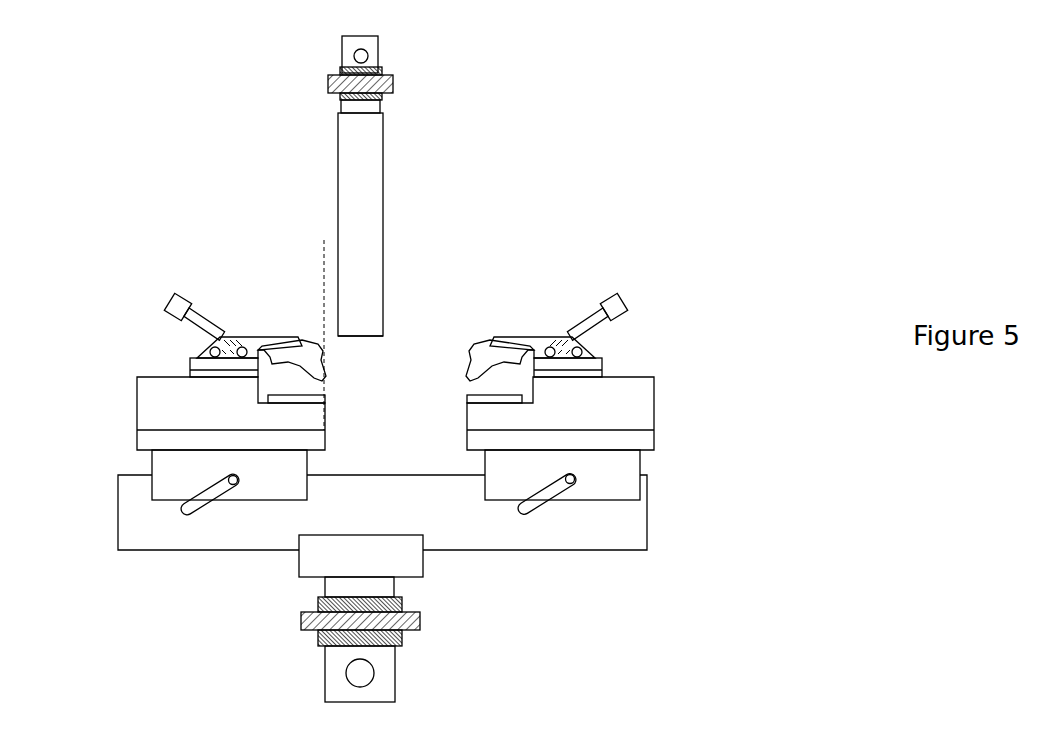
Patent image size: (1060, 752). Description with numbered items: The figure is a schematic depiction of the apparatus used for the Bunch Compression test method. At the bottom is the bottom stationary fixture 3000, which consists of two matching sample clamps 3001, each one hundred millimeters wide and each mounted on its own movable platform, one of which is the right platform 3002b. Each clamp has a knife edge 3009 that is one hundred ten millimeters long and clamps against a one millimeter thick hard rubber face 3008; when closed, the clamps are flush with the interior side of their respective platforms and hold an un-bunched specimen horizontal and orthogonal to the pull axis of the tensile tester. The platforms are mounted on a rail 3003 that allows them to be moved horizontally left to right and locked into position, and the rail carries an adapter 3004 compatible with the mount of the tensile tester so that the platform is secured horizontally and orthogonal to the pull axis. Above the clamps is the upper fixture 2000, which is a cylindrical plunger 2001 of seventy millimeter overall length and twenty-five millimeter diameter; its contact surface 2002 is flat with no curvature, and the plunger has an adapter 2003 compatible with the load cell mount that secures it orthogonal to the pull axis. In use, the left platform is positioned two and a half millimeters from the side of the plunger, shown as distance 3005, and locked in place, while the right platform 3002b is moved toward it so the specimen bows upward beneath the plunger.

The upper fixture 2000 is at (245, 143).
The cylindrical plunger 2001 is at (398, 197).
The contact surface 2002 is at (363, 350).
The adapter 2003 is at (402, 85).
The bottom stationary fixture 3000 is at (210, 632).
The sample clamp 3001 is at (172, 340).
The right movable platform 3002b is at (130, 399).
The rail 3003 is at (462, 530).
The adapter 3004 is at (420, 666).
The distance 3005 is at (362, 253).
The hard rubber face 3008 is at (550, 407).
The knife edge 3009 is at (455, 362).